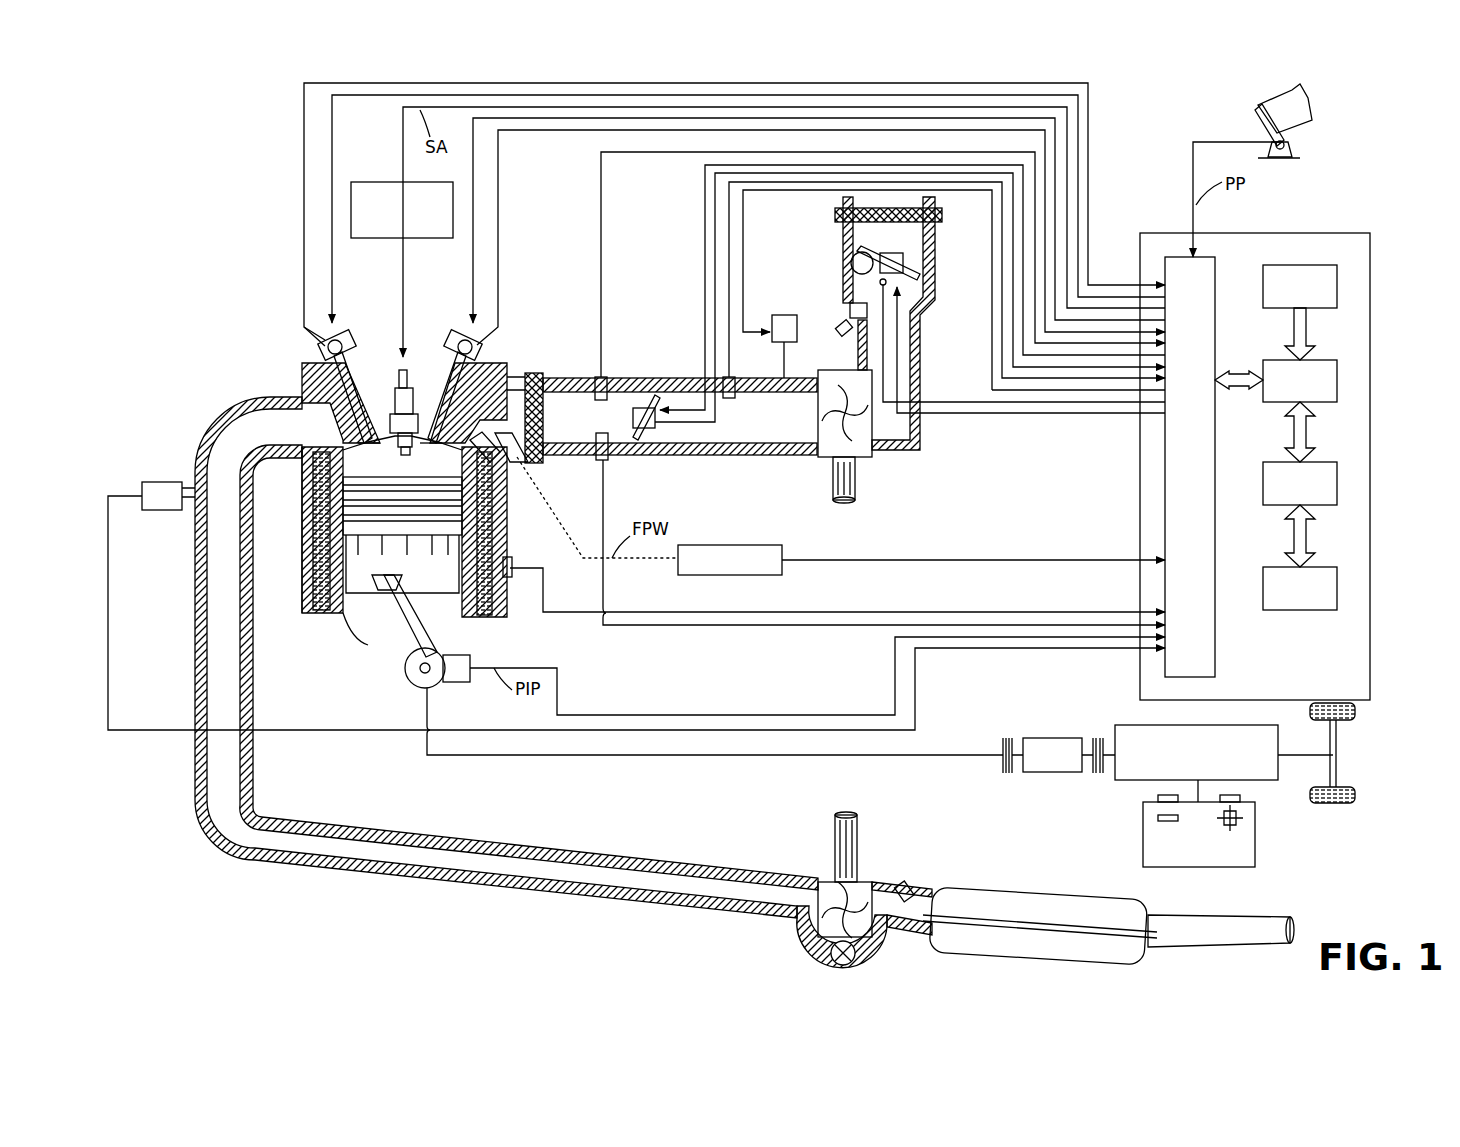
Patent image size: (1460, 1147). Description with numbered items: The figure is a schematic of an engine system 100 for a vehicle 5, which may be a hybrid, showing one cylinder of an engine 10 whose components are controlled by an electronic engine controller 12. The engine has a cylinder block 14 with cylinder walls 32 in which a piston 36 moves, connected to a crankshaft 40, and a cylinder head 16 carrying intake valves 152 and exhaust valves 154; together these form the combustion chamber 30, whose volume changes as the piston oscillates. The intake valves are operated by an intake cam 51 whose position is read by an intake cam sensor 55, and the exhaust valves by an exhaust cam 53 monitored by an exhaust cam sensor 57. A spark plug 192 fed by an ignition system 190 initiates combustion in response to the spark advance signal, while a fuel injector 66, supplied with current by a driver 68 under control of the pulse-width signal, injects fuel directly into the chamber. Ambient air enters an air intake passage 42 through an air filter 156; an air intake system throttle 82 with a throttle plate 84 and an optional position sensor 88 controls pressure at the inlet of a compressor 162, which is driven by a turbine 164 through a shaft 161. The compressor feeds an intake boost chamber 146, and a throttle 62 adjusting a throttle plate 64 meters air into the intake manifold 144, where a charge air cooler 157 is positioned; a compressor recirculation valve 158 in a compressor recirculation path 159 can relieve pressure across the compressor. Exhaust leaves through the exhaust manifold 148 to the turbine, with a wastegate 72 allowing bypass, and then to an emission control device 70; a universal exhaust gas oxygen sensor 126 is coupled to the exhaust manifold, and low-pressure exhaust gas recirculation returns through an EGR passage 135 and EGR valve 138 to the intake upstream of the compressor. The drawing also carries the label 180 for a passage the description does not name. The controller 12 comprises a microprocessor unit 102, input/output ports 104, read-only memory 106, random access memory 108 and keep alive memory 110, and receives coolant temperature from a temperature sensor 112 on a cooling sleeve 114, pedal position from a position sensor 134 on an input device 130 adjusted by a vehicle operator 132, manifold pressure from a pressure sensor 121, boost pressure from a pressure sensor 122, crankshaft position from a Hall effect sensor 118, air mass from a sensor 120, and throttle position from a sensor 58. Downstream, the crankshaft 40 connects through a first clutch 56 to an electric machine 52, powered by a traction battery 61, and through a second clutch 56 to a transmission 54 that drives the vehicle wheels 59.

The vehicle 5 is at (1388, 735).
The engine 10 is at (232, 296).
The electronic engine controller 12 is at (1370, 236).
The cylinder block 14 is at (292, 512).
The cylinder head 16 is at (520, 360).
The combustion chamber 30 is at (313, 555).
The cylinder walls 32 is at (340, 625).
The piston 36 is at (385, 570).
The crankshaft 40 is at (415, 685).
The air intake passage 42 is at (902, 247).
The intake cam 51 is at (460, 342).
The electric machine 52 is at (1050, 772).
The exhaust cam 53 is at (340, 342).
The transmission 54 is at (1255, 780).
The intake cam sensor 55 is at (485, 345).
The clutch 56 is at (1004, 738).
The exhaust cam sensor 57 is at (320, 342).
The throttle position sensor 58 is at (655, 422).
The vehicle wheels 59 is at (1335, 803).
The traction battery 61 is at (1196, 867).
The throttle 62 is at (652, 395).
The throttle plate 64 is at (662, 400).
The fuel injector 66 is at (505, 465).
The driver 68 is at (762, 545).
The emission control device 70 is at (932, 948).
The wastegate 72 is at (831, 955).
The air intake system throttle 82 is at (858, 252).
The throttle plate 84 is at (853, 255).
The position sensor 88 is at (848, 266).
The engine system 100 is at (152, 140).
The microprocessor unit 102 is at (1337, 379).
The input/output ports 104 is at (1218, 265).
The read-only memory 106 is at (1337, 283).
The random access memory 108 is at (1337, 482).
The keep alive memory 110 is at (1337, 587).
The temperature sensor 112 is at (500, 555).
The cooling sleeve 114 is at (495, 603).
The Hall effect sensor 118 is at (450, 682).
The air mass sensor 120 is at (606, 460).
The pressure sensor 121 is at (603, 376).
The pressure sensor 122 is at (732, 376).
The universal exhaust gas oxygen sensor 126 is at (142, 485).
The input device 130 is at (1274, 135).
The vehicle operator 132 is at (1310, 105).
The position sensor 134 is at (1300, 150).
The EGR passage 135 is at (856, 340).
The EGR valve 138 is at (850, 310).
The intake manifold 144 is at (595, 429).
The intake boost chamber 146 is at (758, 429).
The exhaust manifold 148 is at (288, 438).
The intake valves 152 is at (480, 448).
The exhaust valves 154 is at (300, 395).
The air filter 156 is at (942, 212).
The charge air cooler 157 is at (545, 460).
The compressor recirculation valve 158 is at (778, 315).
The compressor recirculation path 159 is at (790, 368).
The shaft 161 is at (855, 497).
The compressor 162 is at (872, 455).
The turbine 164 is at (818, 880).
The air passage 180 is at (452, 912).
The ignition system 190 is at (390, 182).
The spark plug 192 is at (418, 360).